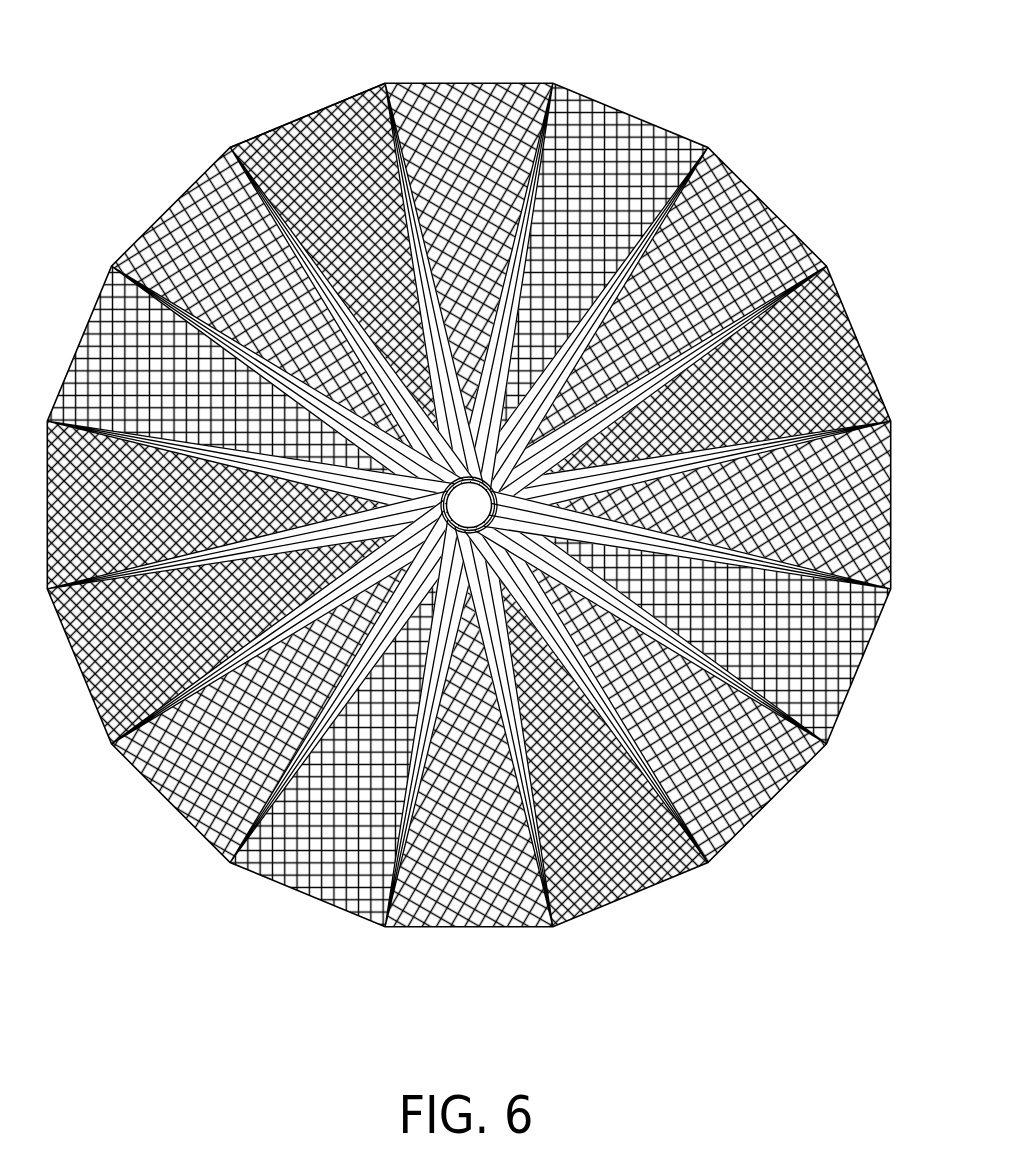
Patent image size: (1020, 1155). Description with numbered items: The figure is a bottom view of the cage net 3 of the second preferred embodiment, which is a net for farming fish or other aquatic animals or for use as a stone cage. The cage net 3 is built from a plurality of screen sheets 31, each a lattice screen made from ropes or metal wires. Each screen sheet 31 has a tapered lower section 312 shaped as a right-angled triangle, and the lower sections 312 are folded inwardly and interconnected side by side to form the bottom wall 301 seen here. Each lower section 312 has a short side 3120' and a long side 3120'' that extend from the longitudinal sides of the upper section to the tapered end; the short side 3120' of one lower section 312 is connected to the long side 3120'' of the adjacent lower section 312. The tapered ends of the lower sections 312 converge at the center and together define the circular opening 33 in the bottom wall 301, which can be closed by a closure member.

The cage net 3 is at (469, 515).
The screen sheet 31 is at (349, 256).
The lower section 312 is at (276, 110).
The short side 3120' is at (588, 277).
The long side 3120'' is at (648, 300).
The bottom wall 301 is at (305, 680).
The circular opening 33 is at (487, 687).